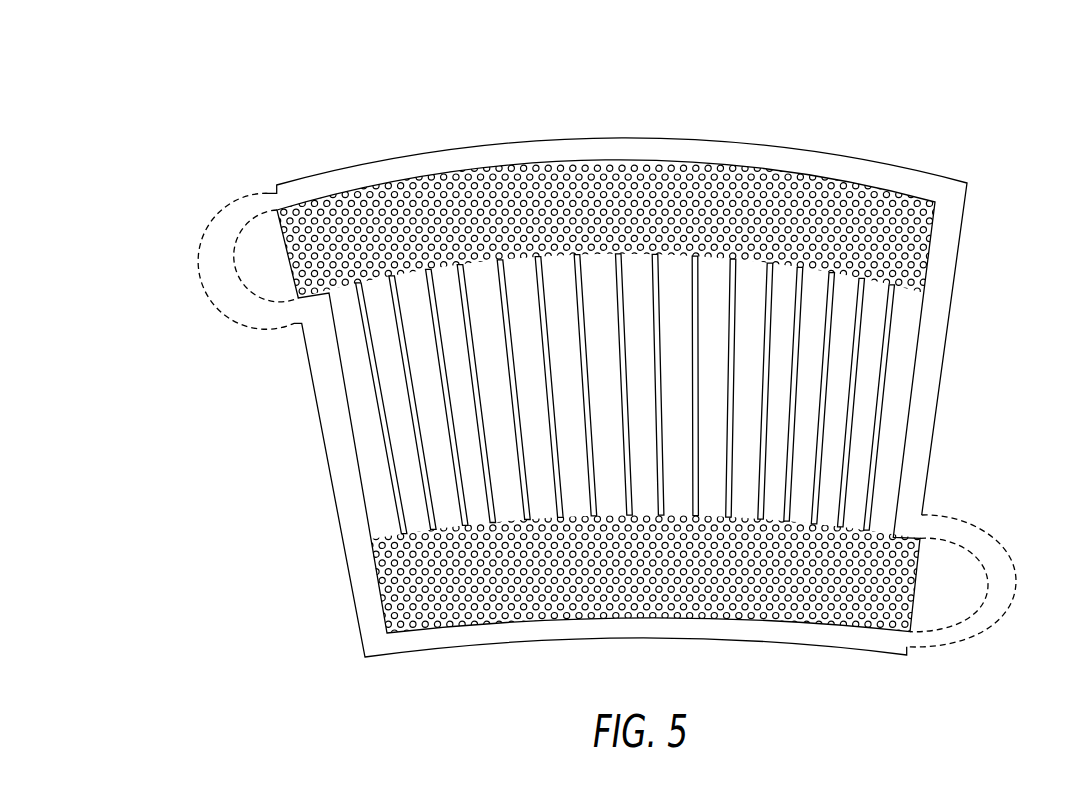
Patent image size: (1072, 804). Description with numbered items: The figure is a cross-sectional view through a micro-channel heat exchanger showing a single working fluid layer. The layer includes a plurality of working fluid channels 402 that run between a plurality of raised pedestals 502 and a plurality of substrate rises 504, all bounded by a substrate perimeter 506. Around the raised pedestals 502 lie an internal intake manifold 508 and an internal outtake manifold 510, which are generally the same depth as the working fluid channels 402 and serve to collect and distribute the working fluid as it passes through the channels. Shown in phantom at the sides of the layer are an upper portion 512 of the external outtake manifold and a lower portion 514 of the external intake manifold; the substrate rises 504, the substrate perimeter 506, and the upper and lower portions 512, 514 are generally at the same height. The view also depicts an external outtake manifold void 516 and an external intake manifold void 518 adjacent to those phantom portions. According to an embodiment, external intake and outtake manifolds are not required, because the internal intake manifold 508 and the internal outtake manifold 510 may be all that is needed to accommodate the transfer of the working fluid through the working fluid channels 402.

The working fluid channels 402 is at (872, 330).
The raised pedestals 502 is at (360, 273).
The substrate rises 504 is at (857, 390).
The substrate perimeter 506 is at (602, 148).
The internal intake manifold 508 is at (452, 617).
The internal outtake manifold 510 is at (712, 203).
The upper portion of external outtake manifold 512 is at (232, 245).
The lower portion of external intake manifold 514 is at (985, 622).
The external outtake manifold void 516 is at (273, 247).
The external intake manifold void 518 is at (955, 583).